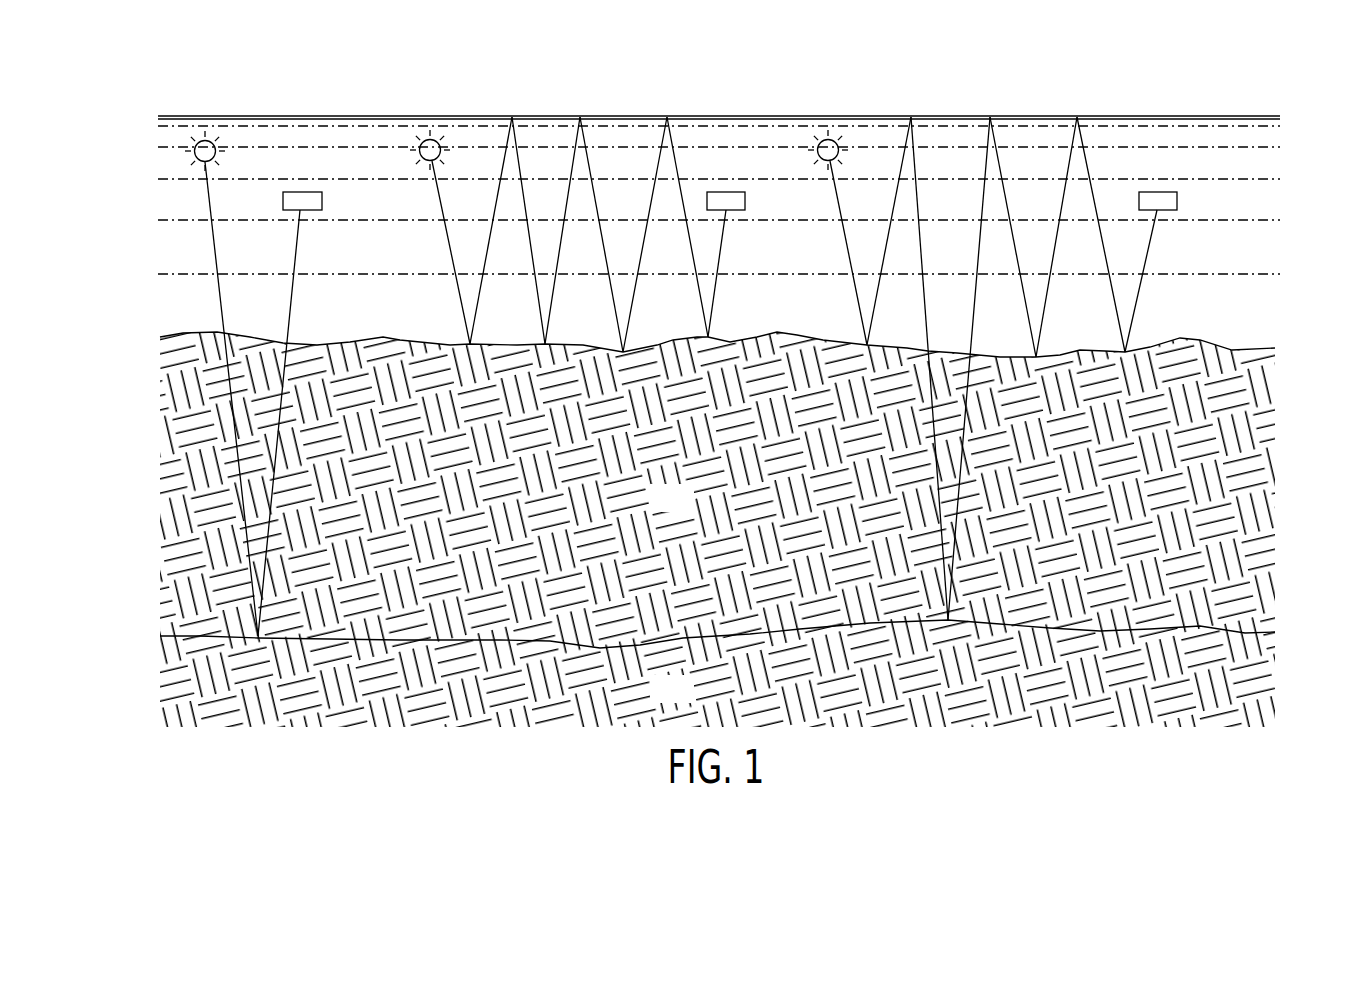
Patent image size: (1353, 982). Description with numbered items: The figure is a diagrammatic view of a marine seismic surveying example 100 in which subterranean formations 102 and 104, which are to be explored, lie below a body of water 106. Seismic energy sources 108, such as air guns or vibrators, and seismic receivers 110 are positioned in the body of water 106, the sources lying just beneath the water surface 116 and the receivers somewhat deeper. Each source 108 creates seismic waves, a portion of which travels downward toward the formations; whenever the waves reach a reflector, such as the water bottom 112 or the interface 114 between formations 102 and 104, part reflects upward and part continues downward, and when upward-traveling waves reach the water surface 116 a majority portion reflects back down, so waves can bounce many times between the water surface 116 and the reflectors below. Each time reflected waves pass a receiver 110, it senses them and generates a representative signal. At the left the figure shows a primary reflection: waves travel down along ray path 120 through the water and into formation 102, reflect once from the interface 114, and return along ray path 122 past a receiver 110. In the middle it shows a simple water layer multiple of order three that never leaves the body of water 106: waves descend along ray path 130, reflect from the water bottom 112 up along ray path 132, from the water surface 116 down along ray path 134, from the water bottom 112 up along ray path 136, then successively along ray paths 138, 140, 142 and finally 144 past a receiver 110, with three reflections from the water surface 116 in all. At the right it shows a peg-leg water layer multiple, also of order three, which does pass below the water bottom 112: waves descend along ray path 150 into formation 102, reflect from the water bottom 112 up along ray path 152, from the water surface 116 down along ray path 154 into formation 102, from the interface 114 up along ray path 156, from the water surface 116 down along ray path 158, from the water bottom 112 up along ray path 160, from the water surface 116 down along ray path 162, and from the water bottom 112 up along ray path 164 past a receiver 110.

The marine seismic surveying example 100 is at (320, 73).
The subterranean formation 102 is at (655, 509).
The subterranean formation 104 is at (655, 700).
The body of water 106 is at (366, 312).
The seismic energy source 108 is at (196, 142).
The seismic receiver 110 is at (322, 201).
The water bottom 112 is at (1248, 350).
The interface 114 is at (1245, 633).
The water surface 116 is at (1252, 115).
The ray path 120 is at (213, 247).
The ray path 122 is at (297, 248).
The ray path 130 is at (447, 243).
The ray path 132 is at (481, 283).
The ray path 134 is at (522, 205).
The ray path 136 is at (556, 285).
The ray path 138 is at (590, 168).
The ray path 140 is at (633, 303).
The ray path 142 is at (677, 168).
The ray path 144 is at (714, 300).
The ray path 150 is at (845, 243).
The ray path 152 is at (880, 283).
The ray path 154 is at (918, 200).
The ray path 156 is at (975, 300).
The ray path 158 is at (1000, 163).
The ray path 160 is at (1045, 314).
The ray path 162 is at (1087, 162).
The ray path 164 is at (1136, 308).